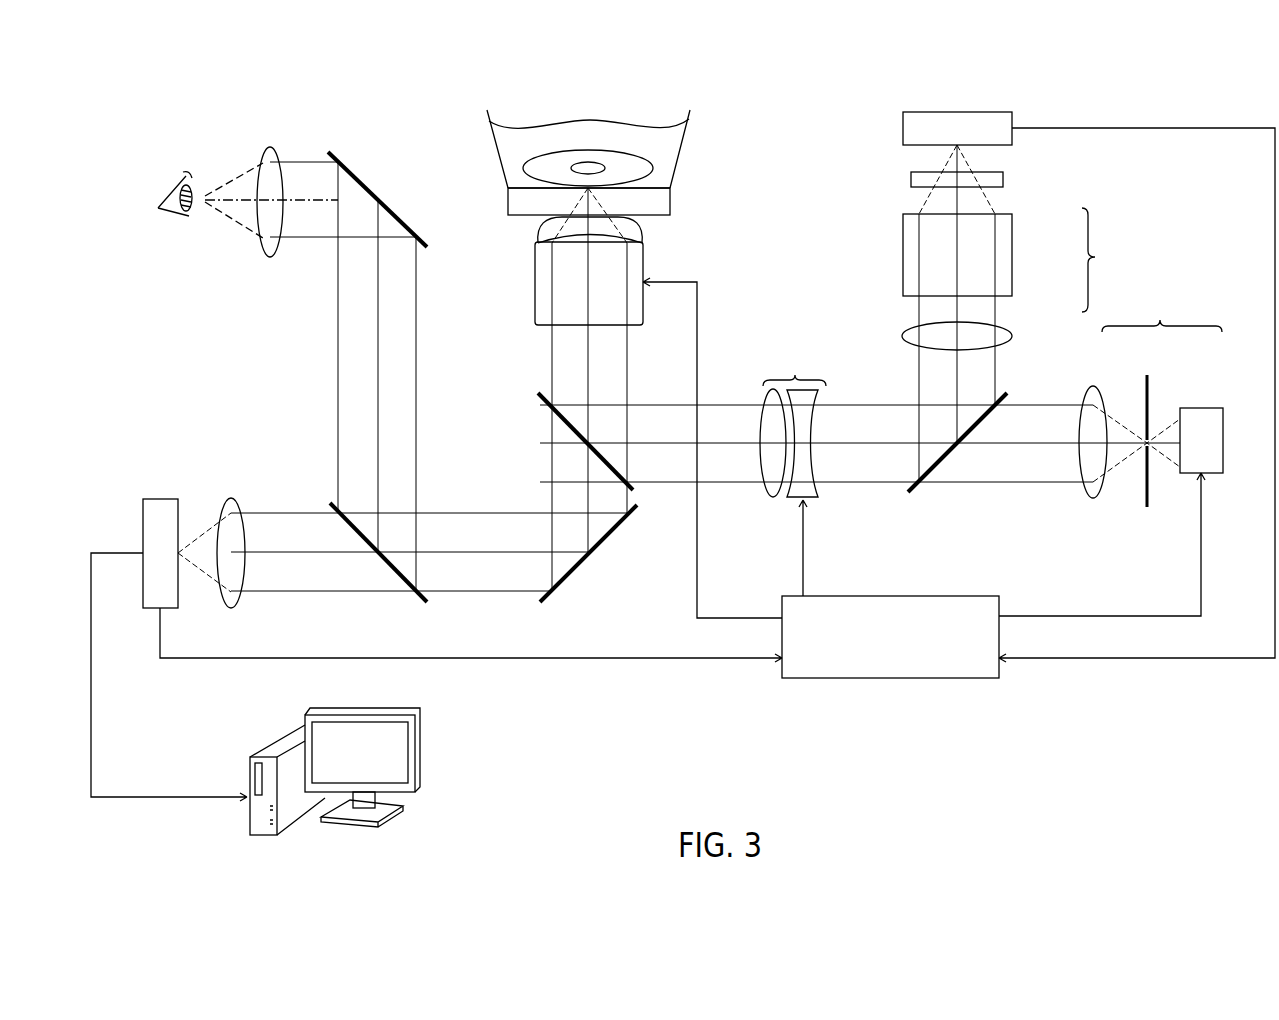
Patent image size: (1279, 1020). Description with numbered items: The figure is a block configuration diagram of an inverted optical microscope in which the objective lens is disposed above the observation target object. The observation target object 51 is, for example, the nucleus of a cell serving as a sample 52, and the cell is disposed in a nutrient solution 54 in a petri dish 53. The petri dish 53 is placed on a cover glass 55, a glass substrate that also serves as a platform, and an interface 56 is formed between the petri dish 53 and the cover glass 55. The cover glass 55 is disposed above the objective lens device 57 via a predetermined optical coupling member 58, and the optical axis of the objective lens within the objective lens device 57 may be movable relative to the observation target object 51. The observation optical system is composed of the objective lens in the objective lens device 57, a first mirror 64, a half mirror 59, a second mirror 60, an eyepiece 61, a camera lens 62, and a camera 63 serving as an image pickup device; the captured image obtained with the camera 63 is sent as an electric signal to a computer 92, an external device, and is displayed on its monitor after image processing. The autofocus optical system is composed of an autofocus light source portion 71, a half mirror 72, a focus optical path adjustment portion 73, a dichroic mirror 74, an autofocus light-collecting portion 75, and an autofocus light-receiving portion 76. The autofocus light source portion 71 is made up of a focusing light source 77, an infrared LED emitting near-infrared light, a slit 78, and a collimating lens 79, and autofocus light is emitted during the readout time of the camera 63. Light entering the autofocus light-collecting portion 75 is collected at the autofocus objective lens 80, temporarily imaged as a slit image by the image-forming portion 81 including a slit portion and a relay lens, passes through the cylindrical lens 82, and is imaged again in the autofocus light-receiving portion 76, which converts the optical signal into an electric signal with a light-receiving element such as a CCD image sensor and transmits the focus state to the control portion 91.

The observation target object 51 is at (587, 161).
The sample 52 is at (622, 150).
The petri dish 53 is at (690, 112).
The nutrient solution 54 is at (670, 140).
The cover glass 55 is at (672, 205).
The interface 56 is at (681, 191).
The objective lens device 57 is at (645, 258).
The optical coupling member 58 is at (643, 229).
The half mirror 59 is at (333, 505).
The second mirror 60 is at (370, 175).
The eyepiece 61 is at (272, 148).
The camera lens 62 is at (229, 498).
The camera 63 is at (158, 498).
The first mirror 64 is at (600, 545).
The autofocus light source portion 71 is at (1162, 313).
The half mirror 72 is at (1005, 393).
The focus optical path adjustment portion 73 is at (793, 421).
The dichroic mirror 74 is at (637, 490).
The autofocus light-collecting portion 75 is at (1102, 260).
The autofocus light-receiving portion 76 is at (985, 112).
The focusing light source 77 is at (1205, 408).
The slit 78 is at (1150, 385).
The collimating lens 79 is at (1094, 388).
The autofocus objective lens 80 is at (1010, 336).
The image-forming portion 81 is at (1012, 250).
The cylindrical lens 82 is at (1003, 180).
The control portion 91 is at (830, 681).
The computer 92 is at (425, 745).